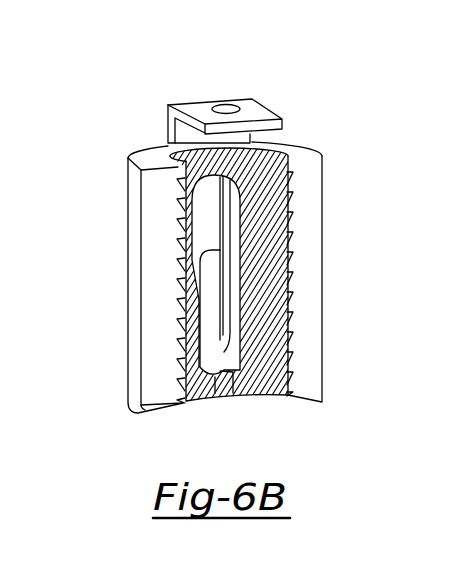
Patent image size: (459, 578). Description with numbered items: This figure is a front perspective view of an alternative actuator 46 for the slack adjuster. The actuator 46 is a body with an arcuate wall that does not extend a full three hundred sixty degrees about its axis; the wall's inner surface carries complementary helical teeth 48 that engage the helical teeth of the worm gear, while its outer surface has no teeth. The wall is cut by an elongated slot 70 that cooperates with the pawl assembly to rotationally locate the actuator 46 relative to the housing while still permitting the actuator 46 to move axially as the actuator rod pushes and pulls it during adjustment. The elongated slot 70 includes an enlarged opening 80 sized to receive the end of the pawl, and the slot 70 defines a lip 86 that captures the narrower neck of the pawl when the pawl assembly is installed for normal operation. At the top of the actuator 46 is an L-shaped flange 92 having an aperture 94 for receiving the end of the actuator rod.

The actuator 46 is at (137, 193).
The helical teeth 48 is at (268, 261).
The elongated slot 70 is at (237, 192).
The enlarged opening 80 is at (233, 373).
The lip 86 is at (199, 312).
The L-shaped flange 92 is at (202, 110).
The aperture 94 is at (233, 110).